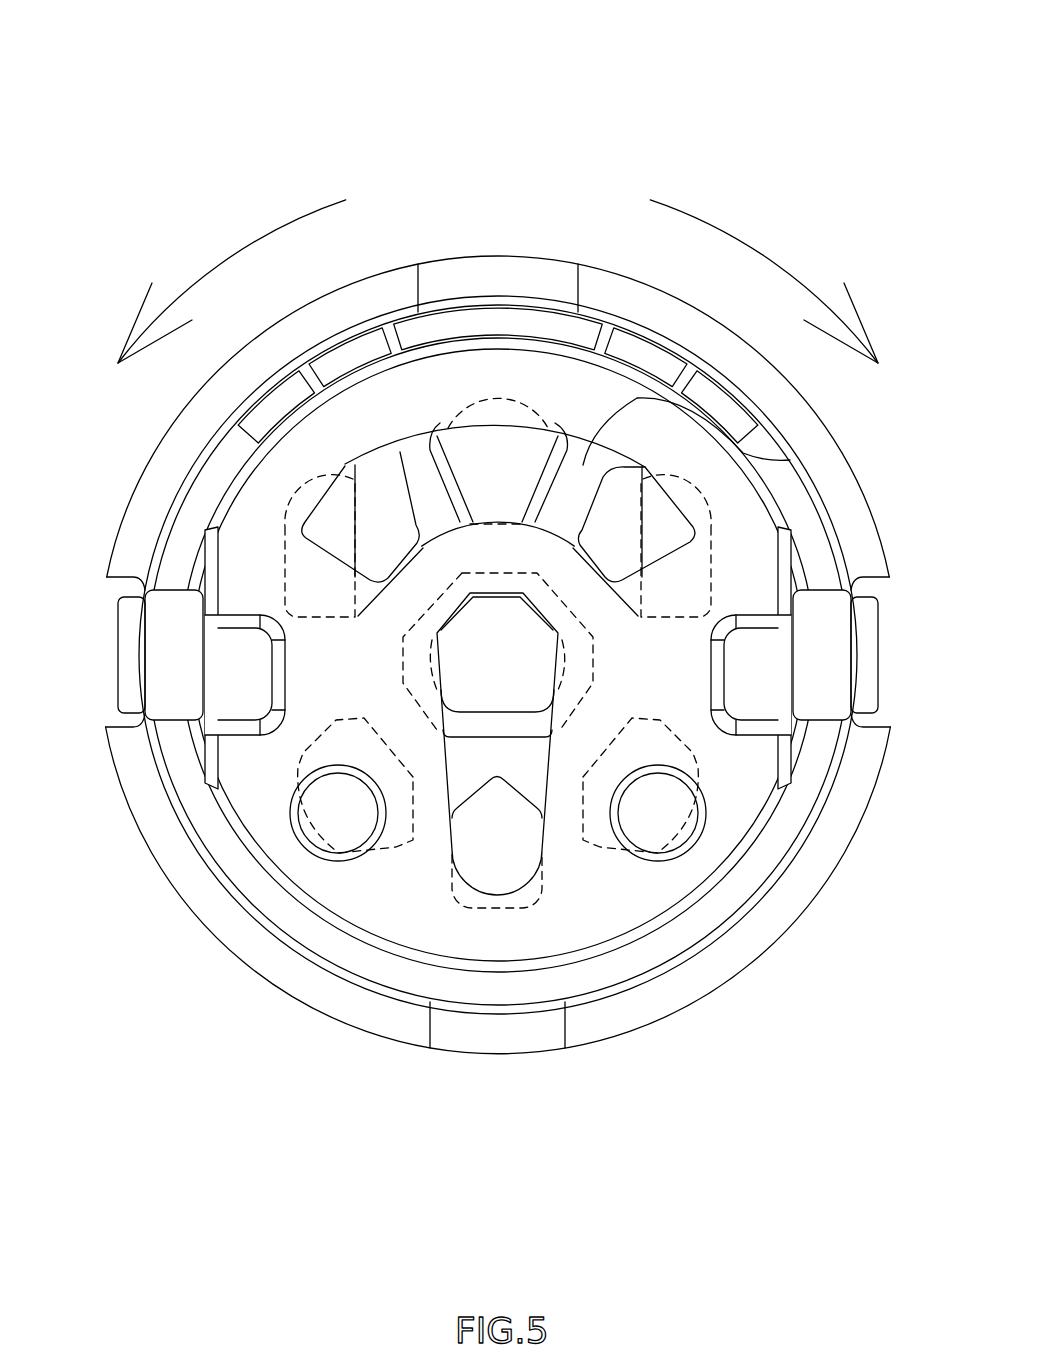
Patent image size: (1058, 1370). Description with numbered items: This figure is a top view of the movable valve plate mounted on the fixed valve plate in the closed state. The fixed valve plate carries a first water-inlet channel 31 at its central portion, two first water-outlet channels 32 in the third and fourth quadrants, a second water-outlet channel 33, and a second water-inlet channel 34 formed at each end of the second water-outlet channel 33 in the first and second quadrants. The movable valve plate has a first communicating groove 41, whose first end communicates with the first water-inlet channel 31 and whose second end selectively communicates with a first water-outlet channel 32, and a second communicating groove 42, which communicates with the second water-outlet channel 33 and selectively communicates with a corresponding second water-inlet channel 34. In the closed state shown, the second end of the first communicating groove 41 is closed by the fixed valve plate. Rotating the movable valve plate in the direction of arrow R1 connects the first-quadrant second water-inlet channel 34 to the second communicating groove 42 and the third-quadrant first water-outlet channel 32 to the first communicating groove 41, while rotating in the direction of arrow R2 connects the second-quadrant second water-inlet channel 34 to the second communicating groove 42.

The first water-inlet channel 31 is at (417, 662).
The first water-outlet channel 32 is at (400, 820).
The second water-outlet channel 33 is at (503, 463).
The second water-inlet channel 34 is at (308, 597).
The first communicating groove 41 is at (525, 767).
The second communicating groove 42 is at (767, 453).
The arrow R1 is at (736, 239).
The arrow R2 is at (243, 243).